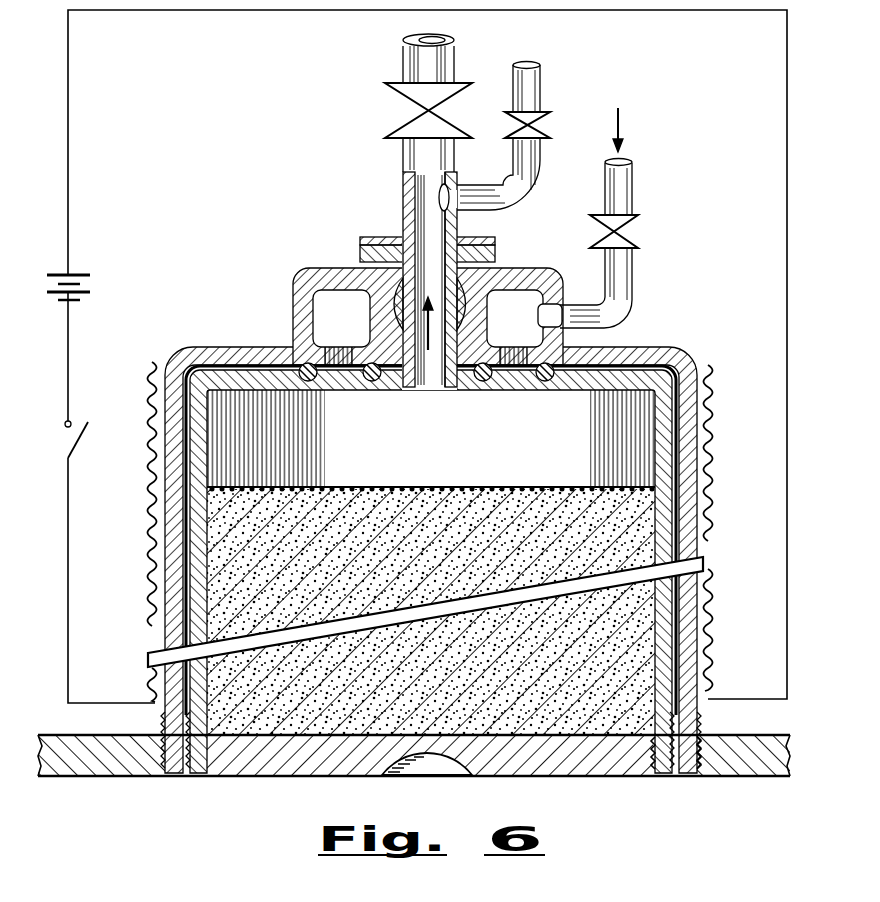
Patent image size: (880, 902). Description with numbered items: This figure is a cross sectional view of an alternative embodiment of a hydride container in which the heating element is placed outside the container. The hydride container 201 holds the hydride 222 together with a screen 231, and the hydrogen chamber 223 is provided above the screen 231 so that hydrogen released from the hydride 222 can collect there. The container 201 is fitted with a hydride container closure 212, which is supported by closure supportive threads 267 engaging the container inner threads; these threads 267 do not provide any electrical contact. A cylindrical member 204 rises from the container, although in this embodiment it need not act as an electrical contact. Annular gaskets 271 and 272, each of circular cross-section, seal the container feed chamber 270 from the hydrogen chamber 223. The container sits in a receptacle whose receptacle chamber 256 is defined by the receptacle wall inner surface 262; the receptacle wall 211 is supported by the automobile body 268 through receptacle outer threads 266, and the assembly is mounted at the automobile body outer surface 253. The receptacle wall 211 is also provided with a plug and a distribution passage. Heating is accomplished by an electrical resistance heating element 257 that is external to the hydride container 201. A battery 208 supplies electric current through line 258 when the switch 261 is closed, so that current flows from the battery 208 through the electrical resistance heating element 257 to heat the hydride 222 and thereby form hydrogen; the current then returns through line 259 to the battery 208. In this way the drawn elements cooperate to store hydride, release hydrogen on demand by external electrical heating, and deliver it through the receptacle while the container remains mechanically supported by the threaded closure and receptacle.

The hydride container 201 is at (665, 378).
The cylindrical member 204 is at (428, 388).
The battery 208 is at (88, 285).
The receptacle wall 211 is at (697, 706).
The hydride container closure 212 is at (315, 765).
The hydride 222 is at (431, 586).
The hydrogen chamber 223 is at (416, 465).
The screen 231 is at (495, 487).
The automobile body outer surface 253 is at (118, 775).
The receptacle chamber 256 is at (675, 540).
The electrical resistance heating element 257 is at (712, 500).
The line 258 is at (68, 593).
The line 259 is at (243, 10).
The switch 261 is at (66, 438).
The receptacle wall inner surface 262 is at (675, 652).
The receptacle outer threads 266 is at (705, 770).
The closure supportive threads 267 is at (640, 768).
The automobile body 268 is at (160, 736).
The container feed chamber 270 is at (326, 330).
The gasket 271 is at (300, 381).
The gasket 272 is at (372, 381).